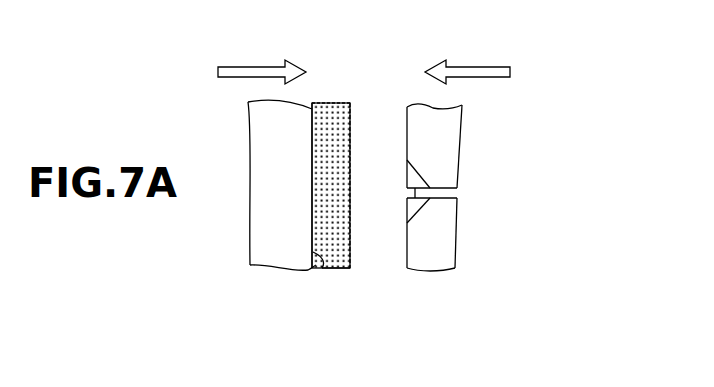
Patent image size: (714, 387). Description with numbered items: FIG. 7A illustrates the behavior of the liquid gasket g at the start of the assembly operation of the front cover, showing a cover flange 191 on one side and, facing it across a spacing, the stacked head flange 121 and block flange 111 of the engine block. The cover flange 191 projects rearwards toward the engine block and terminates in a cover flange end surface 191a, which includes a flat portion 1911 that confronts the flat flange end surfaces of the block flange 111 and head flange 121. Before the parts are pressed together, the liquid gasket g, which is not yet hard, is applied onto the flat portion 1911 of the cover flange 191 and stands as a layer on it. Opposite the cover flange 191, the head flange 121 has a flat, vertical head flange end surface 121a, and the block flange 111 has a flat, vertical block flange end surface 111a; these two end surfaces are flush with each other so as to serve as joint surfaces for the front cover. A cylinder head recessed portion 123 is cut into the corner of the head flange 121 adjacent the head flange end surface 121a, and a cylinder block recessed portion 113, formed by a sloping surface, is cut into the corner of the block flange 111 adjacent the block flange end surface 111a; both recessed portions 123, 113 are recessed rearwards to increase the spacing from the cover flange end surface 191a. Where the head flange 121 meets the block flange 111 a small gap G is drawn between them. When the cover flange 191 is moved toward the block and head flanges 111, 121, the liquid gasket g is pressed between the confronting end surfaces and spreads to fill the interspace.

The cover flange 191 is at (280, 158).
The cover flange end surface 191a is at (323, 265).
The flat portion 1911 is at (331, 185).
The liquid gasket g is at (326, 112).
The head flange 121 is at (445, 131).
The head flange end surface 121a is at (407, 115).
The cylinder head recessed portion 123 is at (407, 178).
The gap between blades G is at (450, 193).
The block flange 111 is at (445, 247).
The block flange end surface 111a is at (407, 254).
The cylinder block recessed portion 113 is at (407, 209).